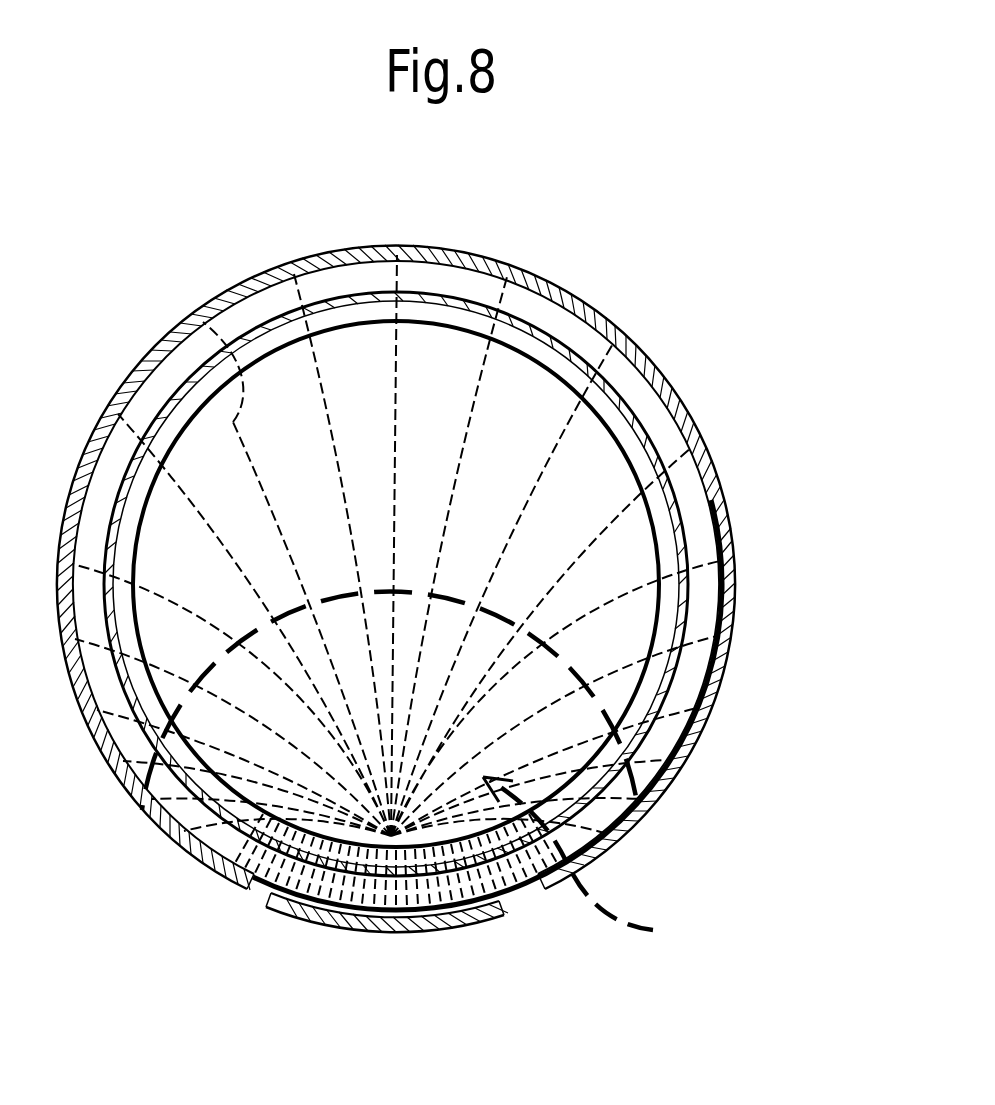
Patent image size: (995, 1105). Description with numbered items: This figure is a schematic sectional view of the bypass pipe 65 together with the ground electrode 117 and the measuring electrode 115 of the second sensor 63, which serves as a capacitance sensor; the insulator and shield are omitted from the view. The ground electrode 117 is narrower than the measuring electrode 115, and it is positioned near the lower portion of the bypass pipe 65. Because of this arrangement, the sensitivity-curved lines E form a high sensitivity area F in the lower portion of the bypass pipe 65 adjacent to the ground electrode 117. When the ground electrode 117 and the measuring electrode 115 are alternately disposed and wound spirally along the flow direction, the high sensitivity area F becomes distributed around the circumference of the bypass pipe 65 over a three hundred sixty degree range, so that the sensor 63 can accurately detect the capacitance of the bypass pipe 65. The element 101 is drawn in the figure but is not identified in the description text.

The second sensor 63 is at (738, 413).
The measuring electrode 115 is at (719, 492).
The inner ring 101 is at (704, 545).
The bypass pipe 65 is at (674, 622).
The ground electrode 117 is at (396, 933).
The sensitivity-curved lines E is at (493, 362).
The high sensitivity area F is at (411, 771).